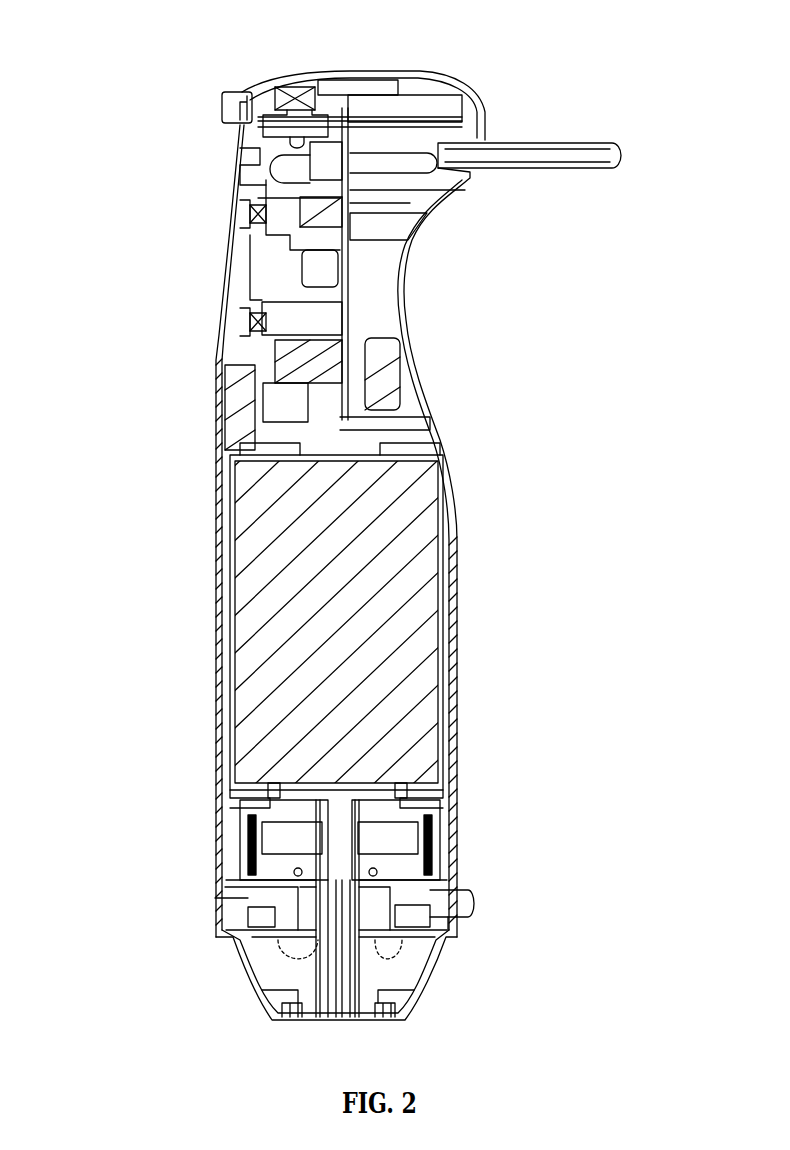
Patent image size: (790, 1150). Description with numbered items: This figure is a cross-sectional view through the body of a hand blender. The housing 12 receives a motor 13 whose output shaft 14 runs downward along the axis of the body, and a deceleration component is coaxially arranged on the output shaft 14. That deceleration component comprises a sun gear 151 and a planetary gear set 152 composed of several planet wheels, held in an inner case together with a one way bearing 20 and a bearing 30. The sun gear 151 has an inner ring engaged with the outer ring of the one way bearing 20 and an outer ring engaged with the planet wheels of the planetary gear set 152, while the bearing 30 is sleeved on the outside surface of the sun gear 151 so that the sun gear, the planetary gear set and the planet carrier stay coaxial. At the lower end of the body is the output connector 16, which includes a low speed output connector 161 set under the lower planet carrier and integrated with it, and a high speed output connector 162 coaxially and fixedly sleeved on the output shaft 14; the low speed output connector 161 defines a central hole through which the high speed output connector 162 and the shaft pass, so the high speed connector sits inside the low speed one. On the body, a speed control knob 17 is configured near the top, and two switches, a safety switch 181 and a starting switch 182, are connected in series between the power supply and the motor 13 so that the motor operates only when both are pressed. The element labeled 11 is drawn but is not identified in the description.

The handle arm 11 is at (483, 637).
The housing 12 is at (453, 500).
The battery 13 is at (288, 600).
The drive unit 14 is at (385, 826).
The first coil 151 is at (375, 884).
The second coil 152 is at (290, 840).
The head portion 16 is at (567, 993).
The head base 161 is at (370, 978).
The locating pin 162 is at (380, 924).
The switch assembly 17 is at (277, 88).
The first circuit element 181 is at (250, 320).
The second circuit element 182 is at (255, 222).
The vibration member 20 is at (300, 870).
The elastic member 30 is at (300, 880).